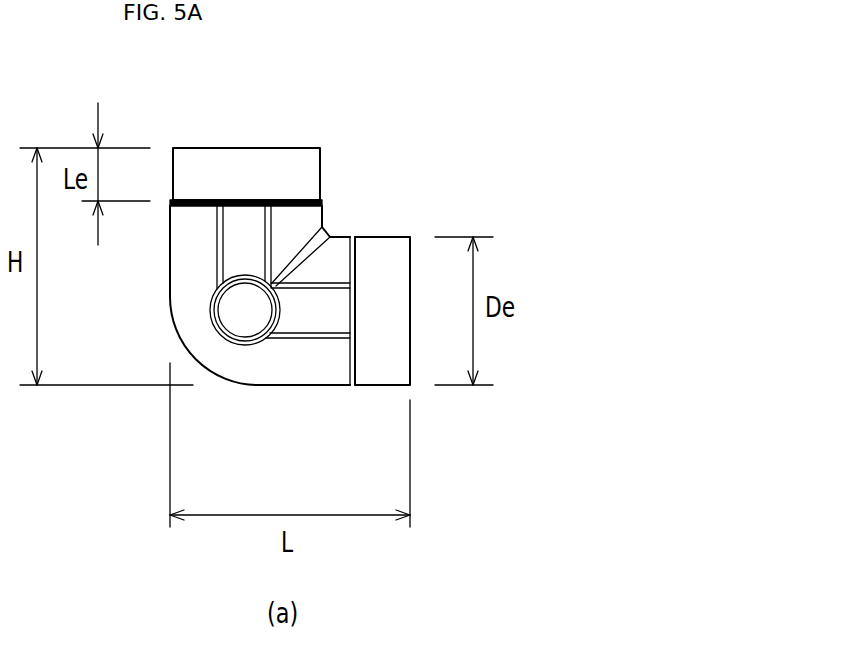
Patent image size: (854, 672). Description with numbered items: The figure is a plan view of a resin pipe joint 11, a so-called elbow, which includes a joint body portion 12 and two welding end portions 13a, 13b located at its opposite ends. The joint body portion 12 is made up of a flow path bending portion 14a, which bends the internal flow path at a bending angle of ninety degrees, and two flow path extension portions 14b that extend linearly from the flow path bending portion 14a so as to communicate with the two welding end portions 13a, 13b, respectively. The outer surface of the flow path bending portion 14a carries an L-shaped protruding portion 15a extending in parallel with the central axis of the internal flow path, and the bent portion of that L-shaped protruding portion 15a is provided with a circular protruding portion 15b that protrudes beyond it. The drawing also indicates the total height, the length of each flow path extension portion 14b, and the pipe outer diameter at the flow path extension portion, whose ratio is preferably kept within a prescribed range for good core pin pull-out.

The resin pipe joint 11 is at (422, 137).
The joint body portion 12 is at (393, 437).
The welding end portion 13a is at (199, 148).
The welding end portion 13b is at (411, 243).
The flow path bending portion 14a is at (290, 373).
The flow path extension portion 14b is at (305, 173).
The L-shaped protruding portion 15a is at (237, 253).
The circular protruding portion 15b is at (238, 312).